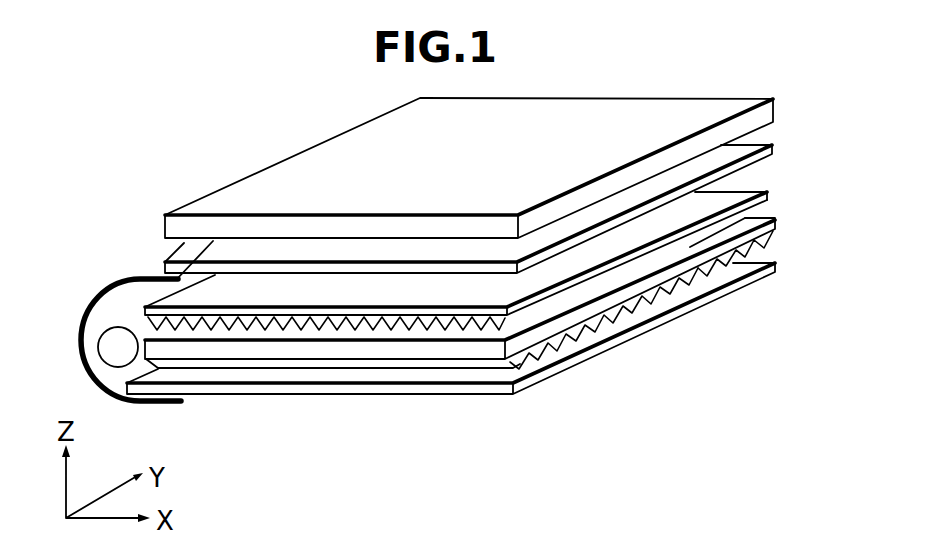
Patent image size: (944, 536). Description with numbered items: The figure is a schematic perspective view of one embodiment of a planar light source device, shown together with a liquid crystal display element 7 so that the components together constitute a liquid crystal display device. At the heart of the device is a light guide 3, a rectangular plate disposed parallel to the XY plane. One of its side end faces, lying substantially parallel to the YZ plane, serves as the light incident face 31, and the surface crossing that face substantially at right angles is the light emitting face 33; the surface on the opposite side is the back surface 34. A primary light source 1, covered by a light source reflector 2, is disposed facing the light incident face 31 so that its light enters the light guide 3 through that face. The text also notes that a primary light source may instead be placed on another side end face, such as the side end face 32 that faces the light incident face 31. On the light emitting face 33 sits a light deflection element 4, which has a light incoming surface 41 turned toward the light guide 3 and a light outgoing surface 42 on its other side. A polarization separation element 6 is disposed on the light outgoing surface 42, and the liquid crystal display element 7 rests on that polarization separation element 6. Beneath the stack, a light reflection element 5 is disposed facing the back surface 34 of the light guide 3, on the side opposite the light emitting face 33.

The primary light source 1 is at (110, 343).
The light source reflector 2 is at (148, 262).
The light guide 3 is at (304, 350).
The light incident face 31 is at (145, 351).
The side end face 32 is at (618, 302).
The light emitting face 33 is at (765, 215).
The back surface 34 is at (433, 370).
The light deflection element 4 is at (467, 318).
The light incoming surface 41 is at (718, 231).
The light outgoing surface 42 is at (725, 197).
The light reflection element 5 is at (355, 395).
The polarization separation element 6 is at (776, 147).
The liquid crystal display element 7 is at (670, 112).